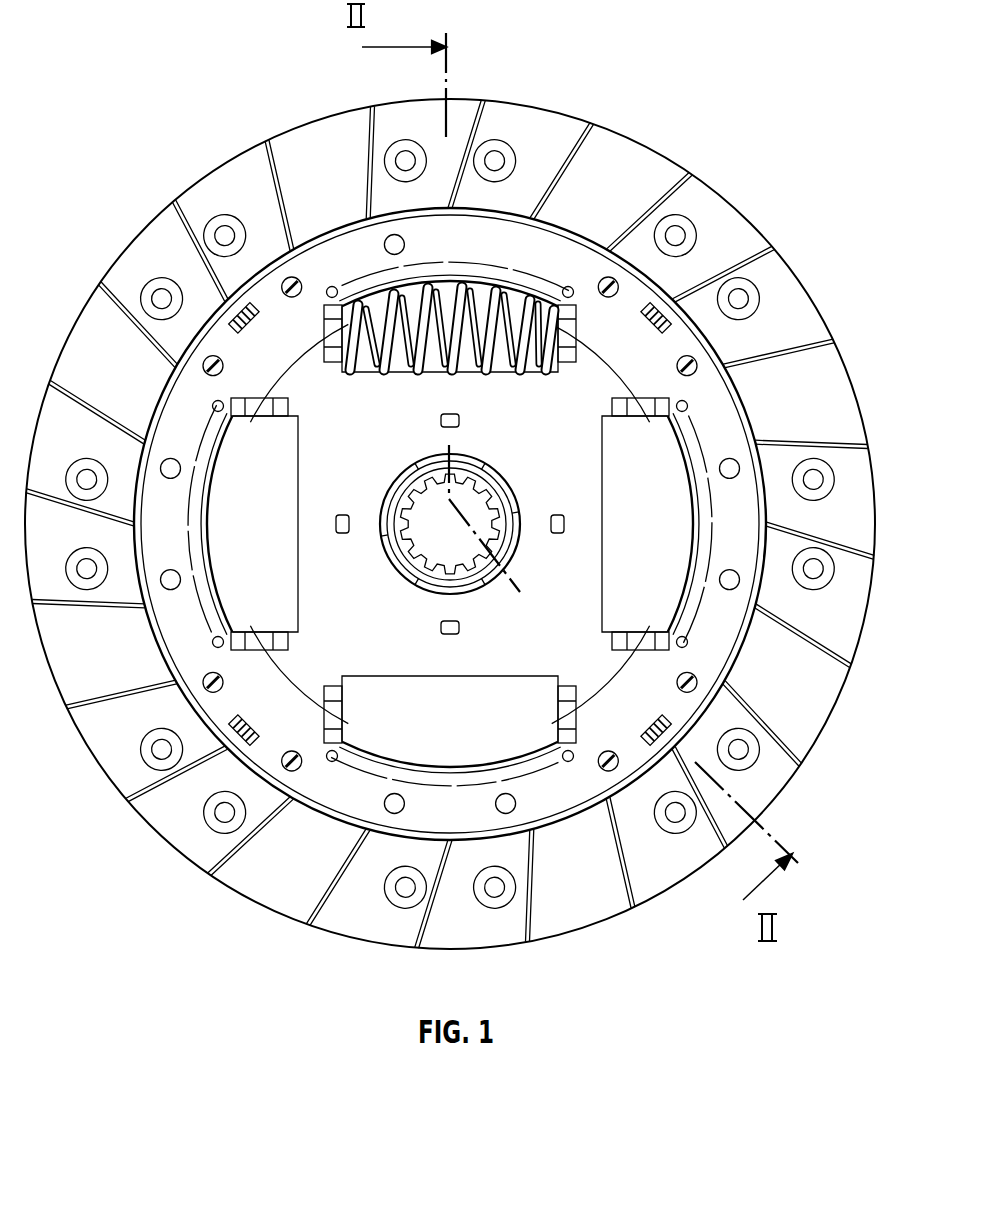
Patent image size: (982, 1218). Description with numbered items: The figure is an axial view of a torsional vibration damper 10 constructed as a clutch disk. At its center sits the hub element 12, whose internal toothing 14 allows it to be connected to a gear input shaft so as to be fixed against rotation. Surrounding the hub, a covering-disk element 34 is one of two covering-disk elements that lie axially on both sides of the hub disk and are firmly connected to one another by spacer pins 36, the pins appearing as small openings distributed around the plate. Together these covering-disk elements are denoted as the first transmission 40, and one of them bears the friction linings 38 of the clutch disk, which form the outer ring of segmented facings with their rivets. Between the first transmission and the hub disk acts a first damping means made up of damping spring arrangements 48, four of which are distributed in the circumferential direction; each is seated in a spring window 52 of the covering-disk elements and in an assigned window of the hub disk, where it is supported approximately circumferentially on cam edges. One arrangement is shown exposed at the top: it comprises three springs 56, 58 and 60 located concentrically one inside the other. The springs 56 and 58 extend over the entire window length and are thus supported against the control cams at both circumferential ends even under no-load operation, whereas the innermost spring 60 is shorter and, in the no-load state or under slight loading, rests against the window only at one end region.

The torsional vibration damper 10 is at (208, 145).
The hub element 12 is at (410, 562).
The internal toothing 14 is at (505, 548).
The covering-disk element 34 is at (718, 652).
The spacer pins 36 is at (509, 800).
The friction linings 38 is at (736, 230).
The first transmission 40 is at (358, 270).
The damping spring arrangement 48 is at (405, 385).
The spring window 52 is at (433, 277).
The spring 56 is at (572, 335).
The spring 58 is at (487, 355).
The innermost spring 60 is at (437, 350).